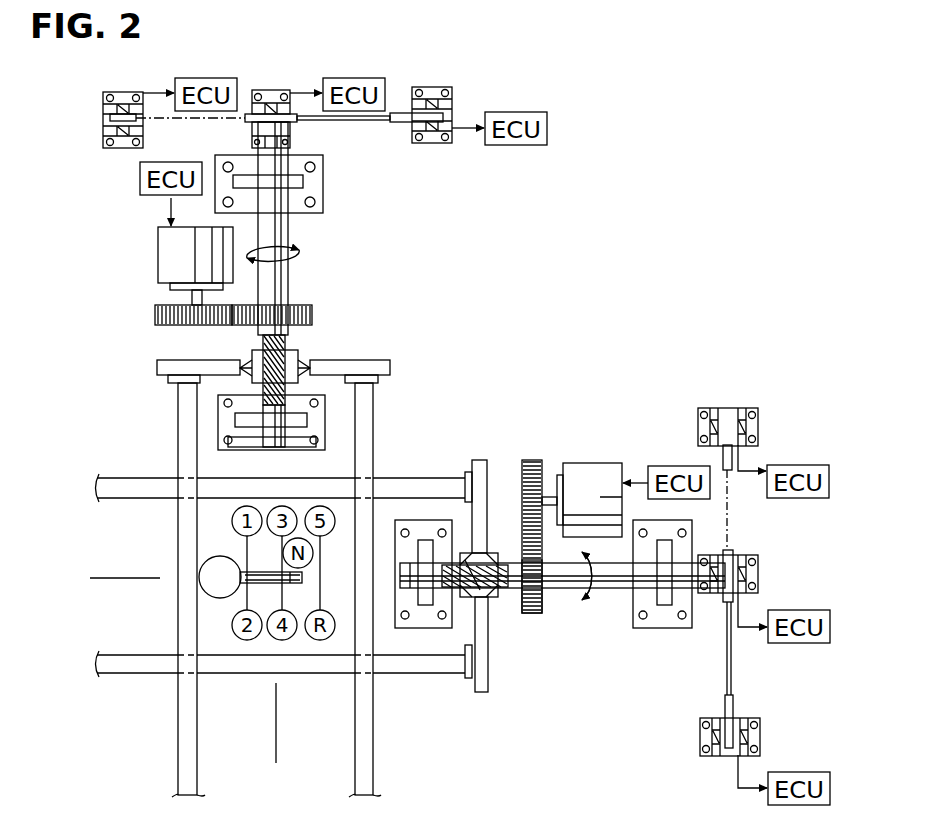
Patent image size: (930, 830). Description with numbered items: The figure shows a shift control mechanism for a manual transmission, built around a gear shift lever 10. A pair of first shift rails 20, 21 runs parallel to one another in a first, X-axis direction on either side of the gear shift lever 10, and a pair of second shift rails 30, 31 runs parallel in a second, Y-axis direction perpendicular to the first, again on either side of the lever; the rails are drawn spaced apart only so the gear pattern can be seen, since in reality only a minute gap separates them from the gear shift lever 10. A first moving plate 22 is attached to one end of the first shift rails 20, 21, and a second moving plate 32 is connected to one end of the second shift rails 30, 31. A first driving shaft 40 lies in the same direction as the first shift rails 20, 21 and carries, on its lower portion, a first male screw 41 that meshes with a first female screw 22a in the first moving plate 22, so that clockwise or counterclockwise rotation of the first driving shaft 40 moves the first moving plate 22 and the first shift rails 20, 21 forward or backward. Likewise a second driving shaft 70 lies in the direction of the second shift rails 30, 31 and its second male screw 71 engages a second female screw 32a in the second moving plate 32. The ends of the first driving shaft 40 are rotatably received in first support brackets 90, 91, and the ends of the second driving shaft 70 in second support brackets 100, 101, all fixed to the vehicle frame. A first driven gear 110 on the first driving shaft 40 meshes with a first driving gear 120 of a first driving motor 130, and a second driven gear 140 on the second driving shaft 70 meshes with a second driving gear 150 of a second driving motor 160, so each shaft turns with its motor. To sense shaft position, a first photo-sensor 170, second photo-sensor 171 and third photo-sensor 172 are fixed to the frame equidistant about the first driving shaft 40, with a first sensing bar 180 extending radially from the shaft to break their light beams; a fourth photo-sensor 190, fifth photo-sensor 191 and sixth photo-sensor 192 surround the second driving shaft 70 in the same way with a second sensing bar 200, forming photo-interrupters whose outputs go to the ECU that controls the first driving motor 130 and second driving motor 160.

The gear shift lever 10 is at (215, 592).
The first shift rail 20 is at (408, 478).
The first shift rail 21 is at (447, 674).
The first moving plate 22 is at (487, 462).
The first female screw 22a is at (482, 598).
The second shift rail 30 is at (178, 758).
The second shift rail 31 is at (355, 758).
The second moving plate 32 is at (392, 366).
The second female screw 32a is at (300, 352).
The first driving shaft 40 is at (555, 590).
The first male screw 41 is at (462, 590).
The second driving shaft 70 is at (300, 297).
The second male screw 71 is at (218, 400).
The first support bracket 90 is at (425, 628).
The first support bracket 91 is at (668, 628).
The second support bracket 100 is at (218, 440).
The second support bracket 101 is at (325, 197).
The first driven gear 110 is at (532, 616).
The first driving gear 120 is at (540, 462).
The first driving motor 130 is at (620, 465).
The second driven gear 140 is at (313, 306).
The second driving gear 150 is at (155, 315).
The second driving motor 160 is at (158, 250).
The first photo-sensor 170 is at (758, 416).
The second photo-sensor 171 is at (758, 566).
The third photo-sensor 172 is at (725, 756).
The first sensing bar 180 is at (733, 706).
The fourth photo-sensor 190 is at (106, 147).
The fifth photo-sensor 191 is at (283, 90).
The sixth photo-sensor 192 is at (452, 112).
The second sensing bar 200 is at (386, 112).